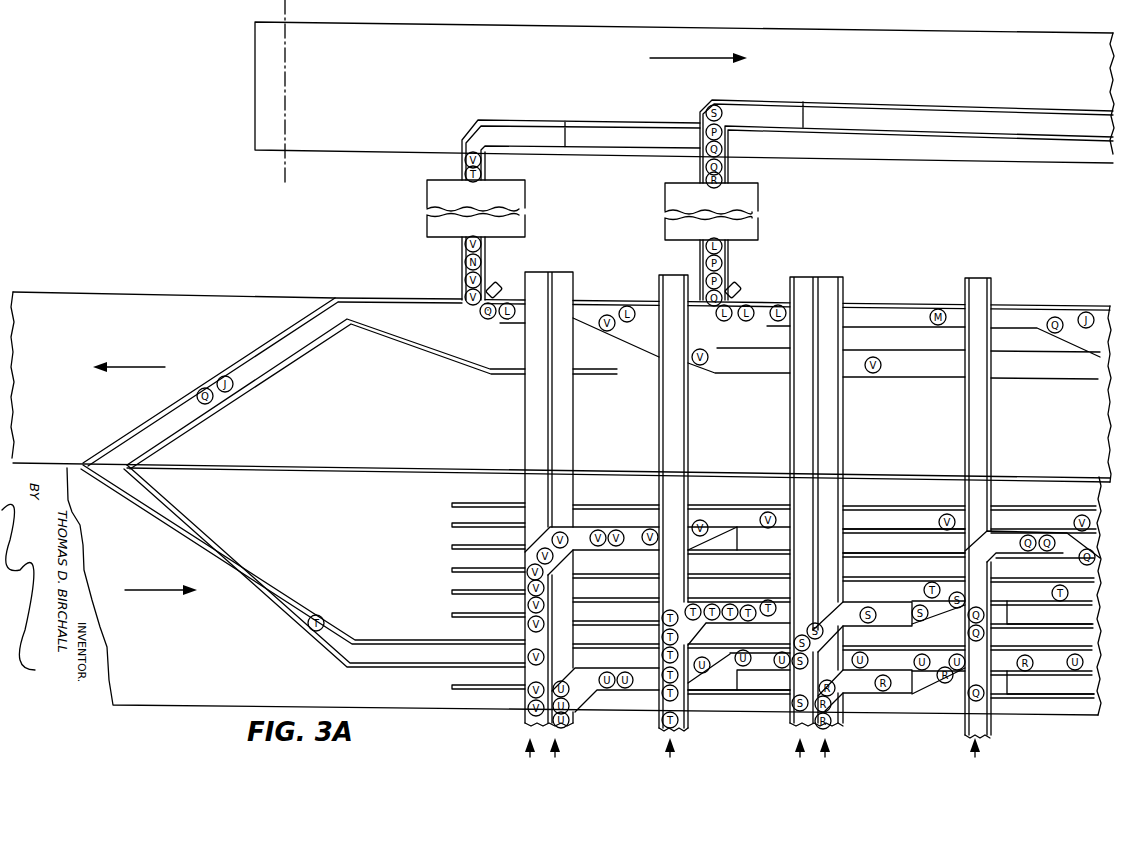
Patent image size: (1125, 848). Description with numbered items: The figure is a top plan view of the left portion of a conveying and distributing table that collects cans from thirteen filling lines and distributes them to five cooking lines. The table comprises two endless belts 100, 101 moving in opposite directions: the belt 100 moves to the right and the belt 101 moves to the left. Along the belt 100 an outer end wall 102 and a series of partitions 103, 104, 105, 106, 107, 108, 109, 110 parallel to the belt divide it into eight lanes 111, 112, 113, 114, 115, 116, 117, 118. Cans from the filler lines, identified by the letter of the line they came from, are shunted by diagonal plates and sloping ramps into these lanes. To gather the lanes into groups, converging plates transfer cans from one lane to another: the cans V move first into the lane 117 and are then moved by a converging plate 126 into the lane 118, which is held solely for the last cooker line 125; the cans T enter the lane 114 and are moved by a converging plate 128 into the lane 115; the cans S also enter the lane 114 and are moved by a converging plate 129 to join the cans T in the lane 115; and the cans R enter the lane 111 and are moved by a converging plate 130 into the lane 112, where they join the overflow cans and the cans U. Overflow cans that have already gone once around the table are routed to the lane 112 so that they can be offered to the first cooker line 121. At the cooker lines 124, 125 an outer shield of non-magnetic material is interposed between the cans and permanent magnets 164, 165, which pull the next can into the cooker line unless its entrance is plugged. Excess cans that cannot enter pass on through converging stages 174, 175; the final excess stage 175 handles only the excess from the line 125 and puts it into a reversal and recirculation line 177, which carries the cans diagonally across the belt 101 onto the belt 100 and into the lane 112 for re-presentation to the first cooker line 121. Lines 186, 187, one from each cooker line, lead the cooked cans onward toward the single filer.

The belt 100 is at (191, 692).
The belt 101 is at (163, 297).
The outer end wall 102 is at (730, 697).
The partition 103 is at (450, 669).
The partition 104 is at (454, 649).
The partition 105 is at (452, 623).
The partition 106 is at (452, 600).
The partition 107 is at (452, 577).
The partition 108 is at (452, 554).
The partition 109 is at (452, 531).
The partition 110 is at (452, 508).
The lane 111 is at (763, 680).
The lane 112 is at (616, 654).
The lane 113 is at (616, 630).
The lane 114 is at (616, 609).
The lane 115 is at (616, 585).
The lane 116 is at (904, 307).
The lane 117 is at (904, 541).
The lane 118 is at (517, 322).
The first cooker line 121 is at (730, 677).
The cooker line 124 is at (700, 175).
The cooker line 125 is at (457, 164).
The converging plate 126 is at (725, 530).
The converging plate 128 is at (781, 617).
The converging plate 129 is at (998, 605).
The converging plate 130 is at (986, 672).
The permanent magnet 164 is at (755, 268).
The permanent magnet 165 is at (516, 267).
The converging stage 174 is at (648, 313).
The final excess stage 175 is at (437, 314).
The reversal and recirculation line 177 is at (153, 424).
The line 186 is at (774, 112).
The line 187 is at (532, 130).